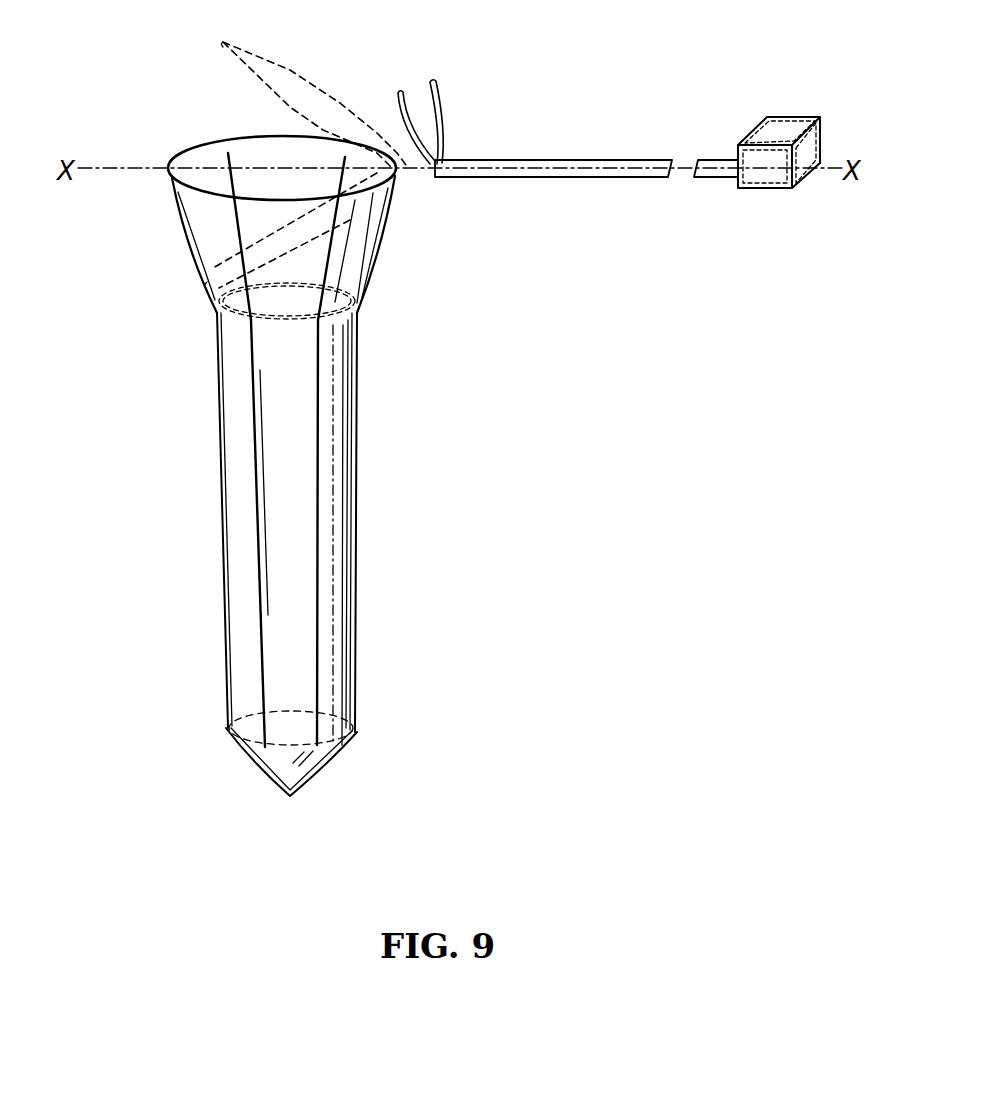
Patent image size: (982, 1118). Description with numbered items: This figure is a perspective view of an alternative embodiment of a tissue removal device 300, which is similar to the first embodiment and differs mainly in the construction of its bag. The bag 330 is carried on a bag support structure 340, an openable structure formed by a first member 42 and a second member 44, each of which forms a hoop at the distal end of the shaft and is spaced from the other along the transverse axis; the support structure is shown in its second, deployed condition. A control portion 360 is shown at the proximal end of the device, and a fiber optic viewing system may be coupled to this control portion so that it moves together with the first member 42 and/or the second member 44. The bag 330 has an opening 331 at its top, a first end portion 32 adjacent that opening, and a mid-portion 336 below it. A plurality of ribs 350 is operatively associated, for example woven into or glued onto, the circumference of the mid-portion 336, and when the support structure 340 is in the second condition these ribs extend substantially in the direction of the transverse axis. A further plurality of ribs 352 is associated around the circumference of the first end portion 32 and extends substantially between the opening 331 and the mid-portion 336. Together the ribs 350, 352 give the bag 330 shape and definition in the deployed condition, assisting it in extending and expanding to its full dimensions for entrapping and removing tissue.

The tissue removal device 300 is at (165, 583).
The bag 330 is at (379, 365).
The opening 331 is at (304, 152).
The mid-portion 336 is at (338, 597).
The bag support structure 340 is at (478, 98).
The ribs 350 is at (222, 440).
The ribs 352 is at (367, 267).
The control portion 360 is at (785, 123).
The first end portion 32 is at (350, 247).
The first member 42 is at (405, 165).
The second member 44 is at (416, 197).